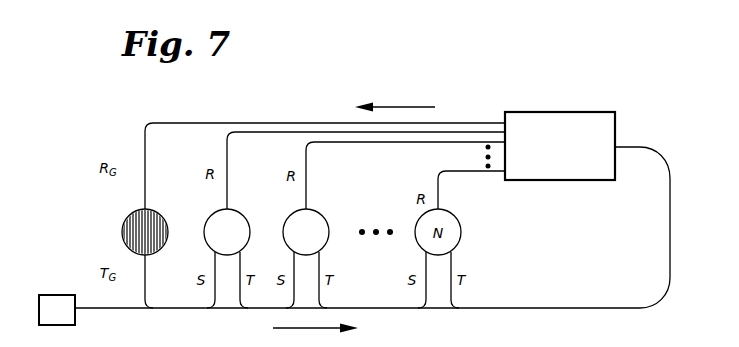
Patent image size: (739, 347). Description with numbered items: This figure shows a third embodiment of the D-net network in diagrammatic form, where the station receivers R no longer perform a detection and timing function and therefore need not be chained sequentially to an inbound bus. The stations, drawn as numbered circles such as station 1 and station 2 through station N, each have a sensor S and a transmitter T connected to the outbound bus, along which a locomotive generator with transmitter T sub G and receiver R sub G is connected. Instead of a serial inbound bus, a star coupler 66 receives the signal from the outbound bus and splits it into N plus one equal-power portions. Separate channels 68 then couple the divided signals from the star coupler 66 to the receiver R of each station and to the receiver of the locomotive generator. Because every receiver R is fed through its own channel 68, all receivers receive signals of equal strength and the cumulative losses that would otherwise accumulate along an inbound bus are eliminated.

The star coupler 66 is at (593, 112).
The channels 68 is at (336, 123).
The station 1 is at (227, 258).
The station 2 is at (306, 258).